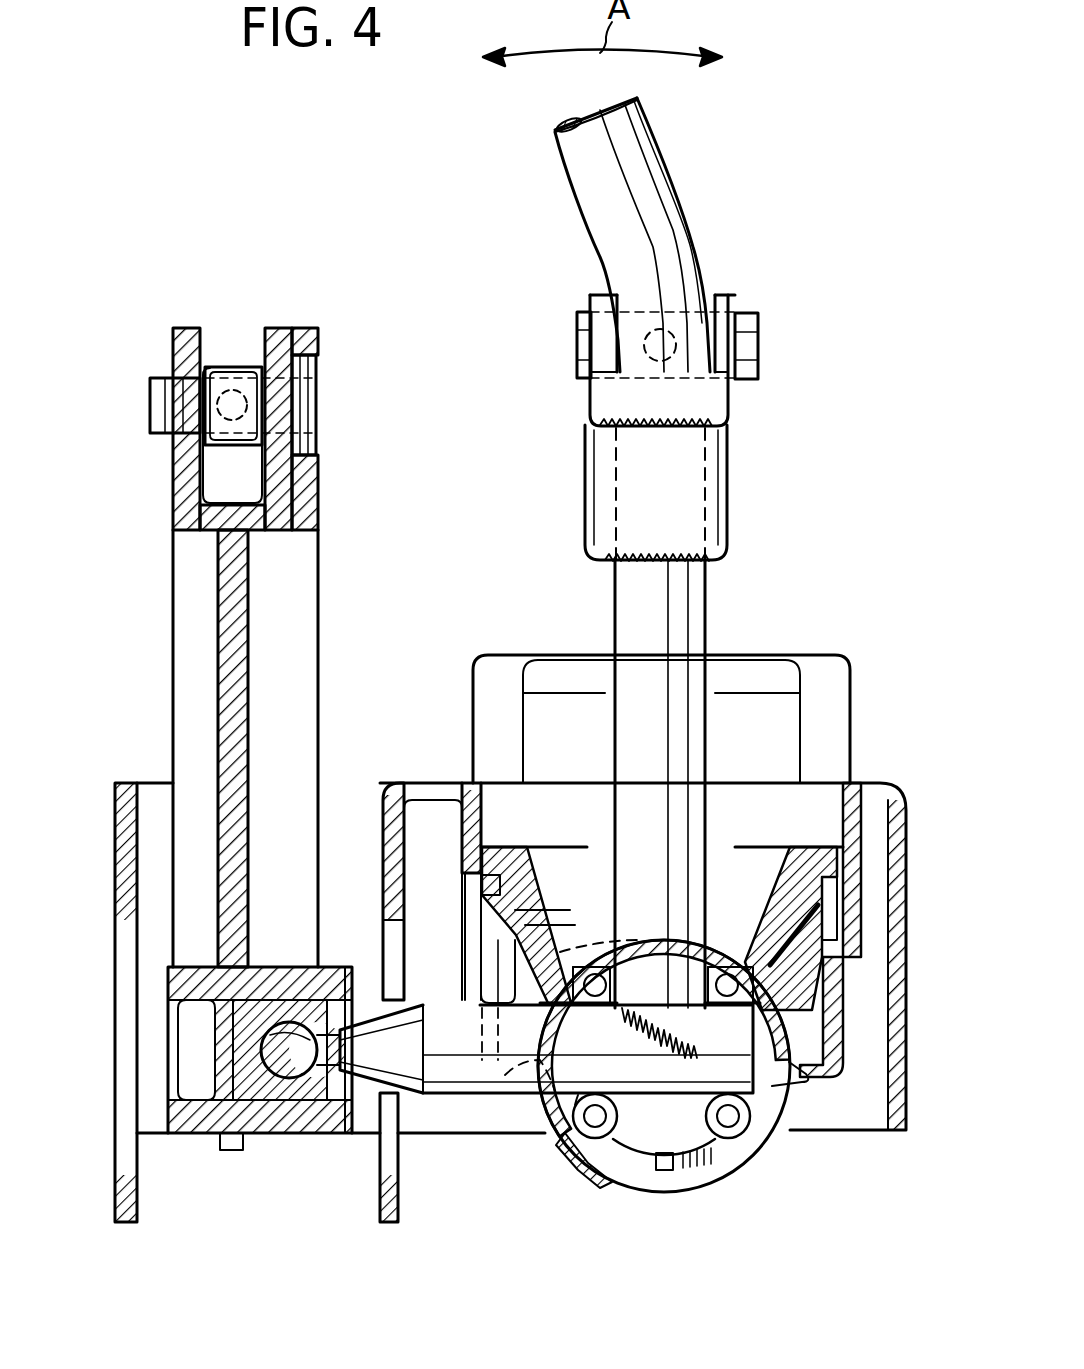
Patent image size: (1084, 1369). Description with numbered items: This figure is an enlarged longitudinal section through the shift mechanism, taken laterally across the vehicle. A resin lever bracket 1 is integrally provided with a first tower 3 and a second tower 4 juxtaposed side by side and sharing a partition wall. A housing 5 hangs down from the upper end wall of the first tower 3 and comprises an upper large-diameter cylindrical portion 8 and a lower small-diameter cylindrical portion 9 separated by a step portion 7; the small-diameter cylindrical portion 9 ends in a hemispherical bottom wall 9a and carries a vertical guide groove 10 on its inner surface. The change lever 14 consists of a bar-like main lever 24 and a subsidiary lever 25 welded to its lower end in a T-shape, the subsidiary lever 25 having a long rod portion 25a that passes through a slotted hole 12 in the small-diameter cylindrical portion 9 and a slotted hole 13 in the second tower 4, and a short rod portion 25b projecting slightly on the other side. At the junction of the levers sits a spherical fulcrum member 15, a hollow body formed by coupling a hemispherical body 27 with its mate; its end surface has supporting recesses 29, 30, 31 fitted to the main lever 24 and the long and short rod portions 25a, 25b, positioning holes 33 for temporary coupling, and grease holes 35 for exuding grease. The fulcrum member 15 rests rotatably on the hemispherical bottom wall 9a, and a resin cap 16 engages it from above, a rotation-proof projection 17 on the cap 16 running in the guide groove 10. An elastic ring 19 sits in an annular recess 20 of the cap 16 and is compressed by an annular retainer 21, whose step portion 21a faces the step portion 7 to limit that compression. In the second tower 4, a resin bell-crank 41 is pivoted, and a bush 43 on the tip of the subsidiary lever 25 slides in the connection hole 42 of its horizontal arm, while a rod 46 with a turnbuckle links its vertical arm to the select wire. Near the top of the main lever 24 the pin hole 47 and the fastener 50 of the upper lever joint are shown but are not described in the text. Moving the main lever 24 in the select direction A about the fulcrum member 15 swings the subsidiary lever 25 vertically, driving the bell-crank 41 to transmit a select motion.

The lever bracket 1 is at (893, 782).
The first tower 3 is at (903, 976).
The second tower 4 is at (125, 886).
The housing 5 is at (847, 1057).
The step portion 7 is at (478, 898).
The large-diameter cylindrical portion 8 is at (470, 836).
The small-diameter cylindrical portion 9 is at (490, 982).
The hemispherical bottom wall 9a is at (642, 1192).
The guide groove 10 is at (838, 885).
The slotted hole 12 is at (560, 1136).
The slotted hole 13 is at (385, 1172).
The change lever 14 is at (683, 192).
The spherical fulcrum member 15 is at (612, 1186).
The cap 16 is at (800, 976).
The rotation-proof projection 17 is at (838, 930).
The elastic ring 19 is at (520, 882).
The annular recess 20 is at (540, 893).
The annular retainer 21 is at (792, 868).
The step portion 21a is at (478, 886).
The main lever 24 is at (703, 608).
The subsidiary lever 25 is at (435, 1000).
The long rod portion 25a is at (472, 1085).
The short rod portion 25b is at (790, 1080).
The hemispherical body 27 is at (700, 1186).
The supporting recess 29 is at (628, 952).
The supporting recess 30 is at (545, 1098).
The supporting recess 31 is at (737, 1083).
The positioning holes 33 is at (727, 975).
The grease holes 35 is at (662, 1155).
The bell-crank 41 is at (318, 632).
The ball bracket 42 is at (272, 985).
The bush 43 is at (286, 1095).
The rod 46 is at (232, 392).
The pivot pin 47 is at (658, 332).
The clevis bolt 50 is at (730, 300).